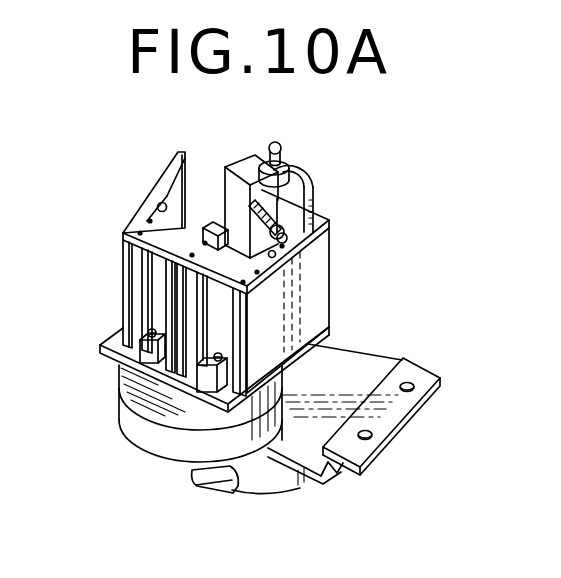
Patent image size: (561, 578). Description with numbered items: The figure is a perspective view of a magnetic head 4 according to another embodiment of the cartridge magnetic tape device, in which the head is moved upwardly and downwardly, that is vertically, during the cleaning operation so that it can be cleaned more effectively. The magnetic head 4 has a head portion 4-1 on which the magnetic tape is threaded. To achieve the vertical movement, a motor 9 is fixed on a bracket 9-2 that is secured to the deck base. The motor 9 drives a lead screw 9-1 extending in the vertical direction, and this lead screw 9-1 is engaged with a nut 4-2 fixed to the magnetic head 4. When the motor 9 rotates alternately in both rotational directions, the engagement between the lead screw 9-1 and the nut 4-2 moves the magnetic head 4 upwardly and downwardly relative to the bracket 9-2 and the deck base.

The magnetic head 4 is at (162, 450).
The head portion 4-1 is at (172, 303).
The nut 4-2 is at (306, 183).
The motor 9 is at (288, 500).
The lead screw 9-1 is at (275, 142).
The bracket 9-2 is at (386, 424).